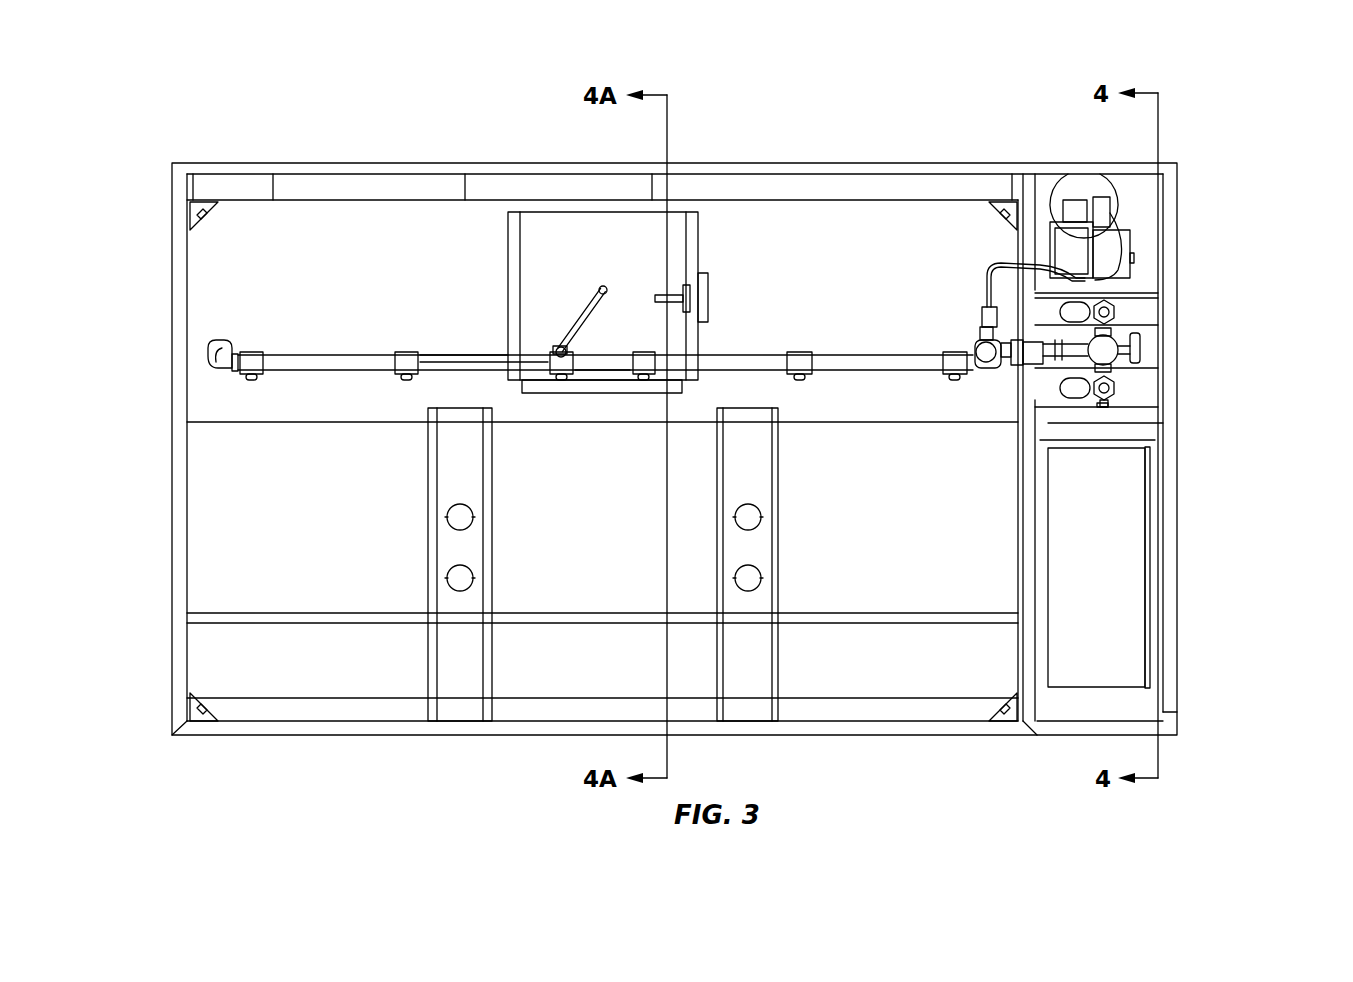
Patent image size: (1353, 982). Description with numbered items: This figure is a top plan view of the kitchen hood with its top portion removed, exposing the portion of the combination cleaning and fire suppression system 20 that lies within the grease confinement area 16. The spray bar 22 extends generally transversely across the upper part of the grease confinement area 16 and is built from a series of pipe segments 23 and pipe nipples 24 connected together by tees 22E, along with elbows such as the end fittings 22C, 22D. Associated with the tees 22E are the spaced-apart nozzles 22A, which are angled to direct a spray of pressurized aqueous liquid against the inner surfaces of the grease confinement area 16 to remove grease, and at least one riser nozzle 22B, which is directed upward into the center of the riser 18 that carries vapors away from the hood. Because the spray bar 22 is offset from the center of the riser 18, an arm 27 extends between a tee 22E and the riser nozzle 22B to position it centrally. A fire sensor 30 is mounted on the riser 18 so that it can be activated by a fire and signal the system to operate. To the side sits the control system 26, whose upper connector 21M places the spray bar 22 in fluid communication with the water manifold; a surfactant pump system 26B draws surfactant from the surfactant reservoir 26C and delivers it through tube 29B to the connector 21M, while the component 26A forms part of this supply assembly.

The grease confinement area 16 is at (797, 257).
The riser 18 is at (515, 298).
The combination cleaning and fire suppression system 20 is at (792, 392).
The upper connector 21M is at (1103, 357).
The spray bar 22 is at (763, 341).
The nozzles 22A is at (247, 375).
The riser nozzle 22B is at (603, 287).
The elbow fitting 22C is at (984, 336).
The end elbow 22D is at (212, 352).
The tees 22E is at (255, 360).
The pipe segments 23 is at (467, 357).
The pipe nipples 24 is at (600, 380).
The control system 26 is at (1207, 339).
The fuel tank 26A is at (1107, 622).
The surfactant pump system 26B is at (1120, 250).
The surfactant reservoir 26C is at (1067, 187).
The arm 27 is at (573, 322).
The tube 29B is at (1007, 253).
The fire sensor 30 is at (707, 273).